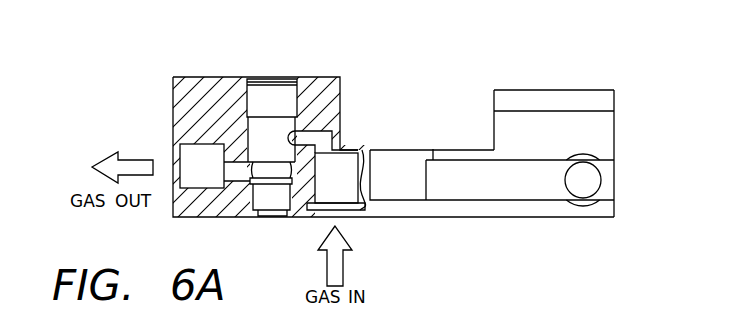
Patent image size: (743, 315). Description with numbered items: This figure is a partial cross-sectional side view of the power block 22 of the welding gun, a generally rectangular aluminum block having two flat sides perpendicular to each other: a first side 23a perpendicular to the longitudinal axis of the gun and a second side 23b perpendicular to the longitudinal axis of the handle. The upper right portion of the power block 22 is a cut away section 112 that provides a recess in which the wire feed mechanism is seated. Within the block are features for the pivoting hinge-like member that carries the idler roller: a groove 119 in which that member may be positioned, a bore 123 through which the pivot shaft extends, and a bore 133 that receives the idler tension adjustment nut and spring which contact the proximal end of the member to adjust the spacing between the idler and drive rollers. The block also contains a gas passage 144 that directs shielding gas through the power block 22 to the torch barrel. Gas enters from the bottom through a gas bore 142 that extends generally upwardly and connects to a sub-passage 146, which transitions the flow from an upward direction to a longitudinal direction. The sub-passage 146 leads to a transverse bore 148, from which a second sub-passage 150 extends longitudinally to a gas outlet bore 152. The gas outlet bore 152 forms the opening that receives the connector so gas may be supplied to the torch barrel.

The first flat side 23a is at (172, 78).
The transverse bore 148 is at (252, 103).
The gas outlet bore 152 is at (202, 158).
The second sub-passage 150 is at (247, 186).
The sub-passage 146 is at (342, 118).
The gas passage 144 is at (345, 168).
The gas bore 142 is at (350, 210).
The second flat side 23b is at (500, 218).
The cut away section 112 is at (465, 82).
The power block 22 is at (599, 71).
The bore 123 is at (453, 148).
The groove 119 is at (510, 160).
The bore 133 is at (605, 182).